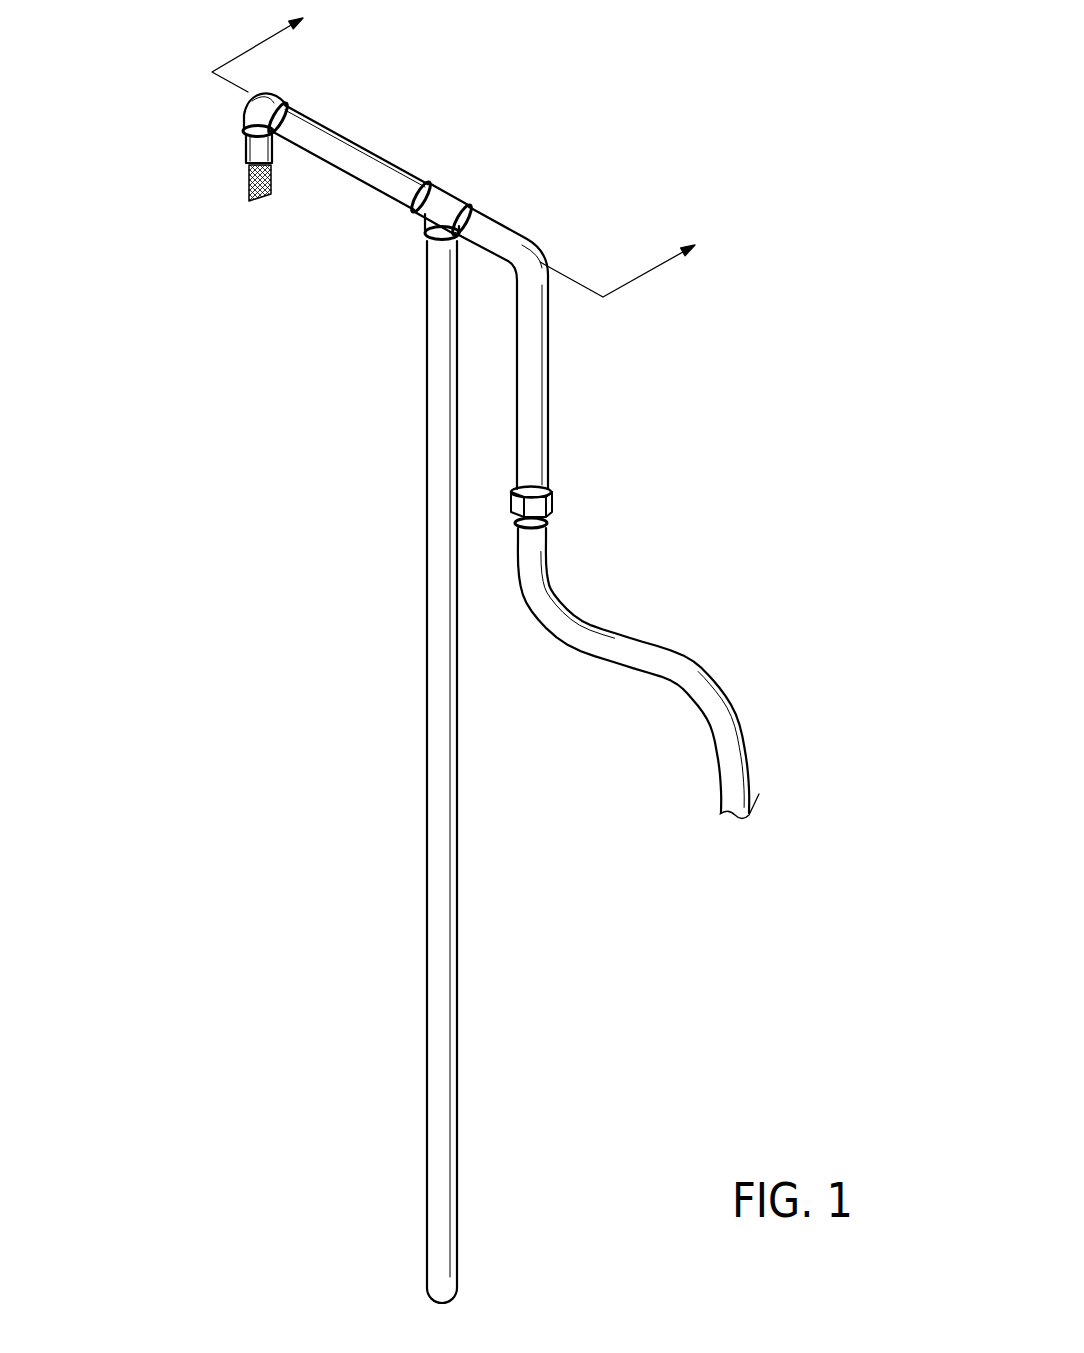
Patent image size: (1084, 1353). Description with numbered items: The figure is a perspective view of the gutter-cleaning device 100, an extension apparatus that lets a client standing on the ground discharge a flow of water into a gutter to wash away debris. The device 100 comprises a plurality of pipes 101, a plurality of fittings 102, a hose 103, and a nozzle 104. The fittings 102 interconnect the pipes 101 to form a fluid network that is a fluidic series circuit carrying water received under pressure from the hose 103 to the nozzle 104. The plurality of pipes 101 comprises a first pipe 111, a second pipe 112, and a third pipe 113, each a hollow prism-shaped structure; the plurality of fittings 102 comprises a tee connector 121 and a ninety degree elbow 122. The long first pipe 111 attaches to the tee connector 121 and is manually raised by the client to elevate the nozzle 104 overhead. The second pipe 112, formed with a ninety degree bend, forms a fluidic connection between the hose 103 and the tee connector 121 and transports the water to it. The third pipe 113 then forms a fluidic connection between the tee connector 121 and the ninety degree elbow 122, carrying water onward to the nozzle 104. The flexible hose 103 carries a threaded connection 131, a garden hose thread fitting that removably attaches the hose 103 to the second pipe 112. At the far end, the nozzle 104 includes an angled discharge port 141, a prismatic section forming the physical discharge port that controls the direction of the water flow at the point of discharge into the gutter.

The gutter-cleaning device 100 is at (128, 102).
The plurality of pipes 101 is at (905, 2).
The plurality of fittings 102 is at (905, 157).
The hose 103 is at (700, 672).
The nozzle 104 is at (230, 185).
The first pipe 111 is at (470, 898).
The second pipe 112 is at (533, 242).
The third pipe 113 is at (393, 148).
The tee connector 121 is at (458, 188).
The 90 degree elbow 122 is at (277, 93).
The threaded connection 131 is at (557, 495).
The angled discharge port 141 is at (263, 207).